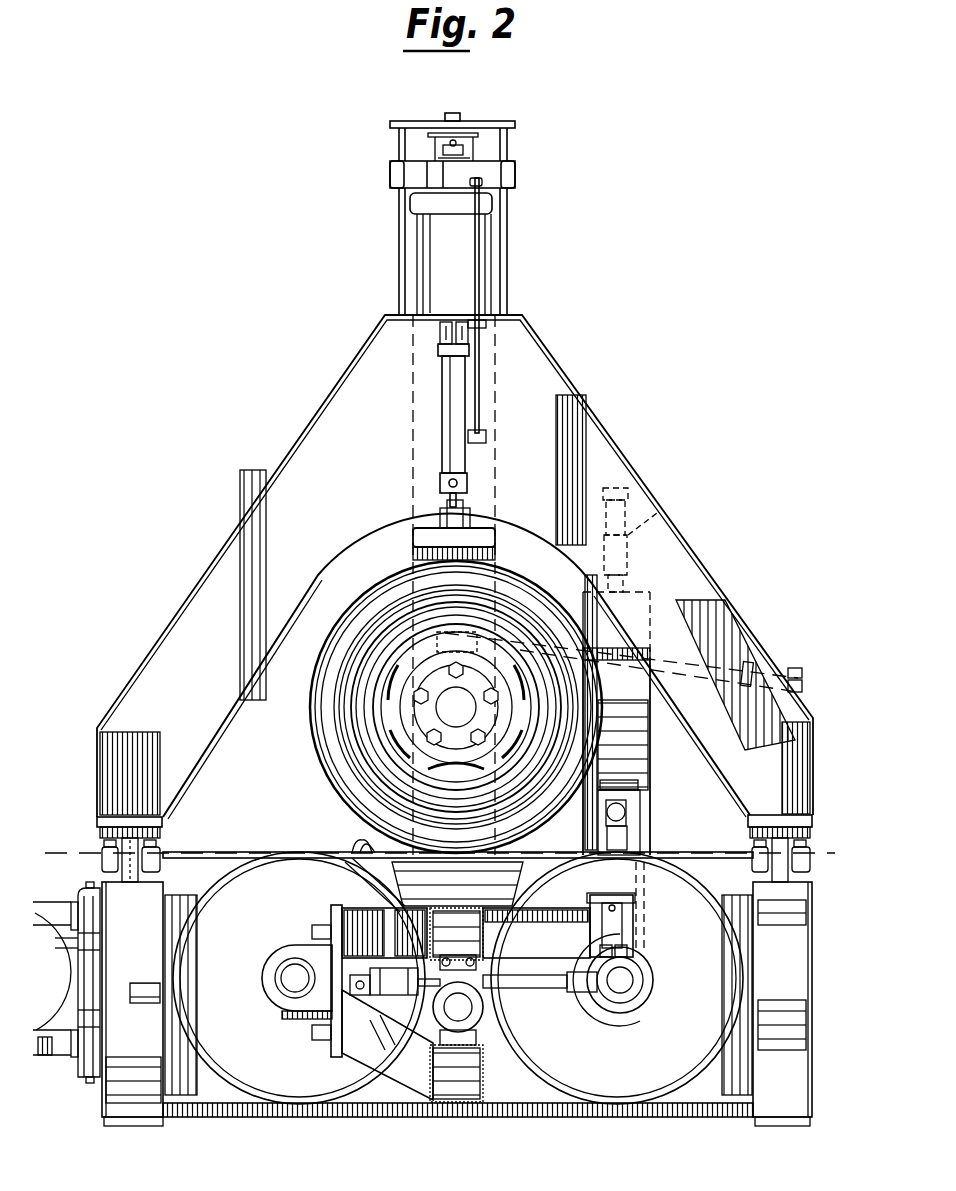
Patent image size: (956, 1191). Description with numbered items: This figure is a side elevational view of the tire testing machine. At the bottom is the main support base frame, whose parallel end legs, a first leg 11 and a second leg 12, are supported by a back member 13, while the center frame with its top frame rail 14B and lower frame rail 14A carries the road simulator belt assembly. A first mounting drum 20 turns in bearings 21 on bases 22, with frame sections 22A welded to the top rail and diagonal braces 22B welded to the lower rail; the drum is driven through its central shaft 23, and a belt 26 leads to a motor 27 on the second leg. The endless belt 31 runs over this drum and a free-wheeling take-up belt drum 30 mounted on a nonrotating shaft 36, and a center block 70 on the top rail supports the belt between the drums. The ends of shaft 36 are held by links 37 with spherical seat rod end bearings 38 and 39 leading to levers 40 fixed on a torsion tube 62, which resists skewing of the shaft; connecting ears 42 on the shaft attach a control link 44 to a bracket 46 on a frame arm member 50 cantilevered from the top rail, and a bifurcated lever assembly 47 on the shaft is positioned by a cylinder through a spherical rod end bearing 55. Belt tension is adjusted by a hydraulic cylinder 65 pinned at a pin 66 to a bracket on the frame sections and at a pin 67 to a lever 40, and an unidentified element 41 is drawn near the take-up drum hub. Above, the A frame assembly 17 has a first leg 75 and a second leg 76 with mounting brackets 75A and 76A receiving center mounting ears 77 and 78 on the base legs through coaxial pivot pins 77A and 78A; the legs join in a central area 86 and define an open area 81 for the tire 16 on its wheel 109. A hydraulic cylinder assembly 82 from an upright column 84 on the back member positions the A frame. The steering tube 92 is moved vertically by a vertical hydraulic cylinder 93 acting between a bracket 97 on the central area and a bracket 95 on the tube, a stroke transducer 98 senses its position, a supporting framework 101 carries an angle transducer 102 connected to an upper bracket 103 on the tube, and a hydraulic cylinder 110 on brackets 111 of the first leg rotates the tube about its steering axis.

The first leg 11 is at (785, 1098).
The second leg 12 is at (125, 1106).
The back member 13 is at (454, 1009).
The lower frame rail 14A is at (470, 1088).
The top frame rail 14B is at (468, 908).
The tire 16 is at (421, 707).
The A frame assembly 17 is at (455, 567).
The first mounting drum 20 is at (280, 1080).
The bearings 21 is at (276, 975).
The bases 22 is at (336, 905).
The frame sections 22A is at (405, 1078).
The diagonal braces 22B is at (352, 852).
The central shaft 23 is at (285, 962).
The belt 26 is at (75, 906).
The motor 27 is at (48, 1030).
The take-up belt drum 30 is at (650, 1080).
The belt 31 is at (362, 845).
The shaft 36 is at (634, 998).
The links 37 is at (550, 992).
The spherical seat rod end bearings 38 is at (630, 996).
The spherical seat rod end bearings 39 is at (501, 992).
The levers 40 is at (484, 1000).
The eccentric 41 is at (600, 1010).
The connecting ears 42 is at (630, 952).
The control link 44 is at (624, 932).
The bracket 46 is at (638, 909).
The bifurcated lever assembly 47 is at (640, 848).
The frame arm member 50 is at (540, 862).
The spherical rod end bearing 55 is at (626, 810).
The torsion tube 62 is at (460, 1012).
The hydraulic cylinder 65 is at (398, 915).
The pin 66 is at (355, 975).
The pin 67 is at (444, 962).
The center block 70 is at (468, 894).
The first leg 75 is at (695, 580).
The mounting bracket 75A is at (810, 828).
The second leg 76 is at (165, 657).
The mounting bracket 76A is at (162, 835).
The center mounting ear 77 is at (785, 880).
The pivot pin 77A is at (812, 856).
The center mounting ear 78 is at (118, 860).
The pivot pin 78A is at (162, 860).
The open area 81 is at (338, 592).
The hydraulic cylinder assembly 82 is at (640, 520).
The upright column 84 is at (648, 790).
The central area 86 is at (490, 410).
The steering tube 92 is at (432, 280).
The vertical hydraulic cylinder 93 is at (442, 405).
The bracket 95 is at (480, 530).
The bracket 97 is at (440, 332).
The stroke transducer 98 is at (480, 365).
The supporting framework 101 is at (514, 176).
The angle transducer 102 is at (440, 152).
The upper bracket 103 is at (412, 205).
The wheel 109 is at (388, 712).
The hydraulic cylinder 110 is at (720, 650).
The brackets 111 is at (800, 672).